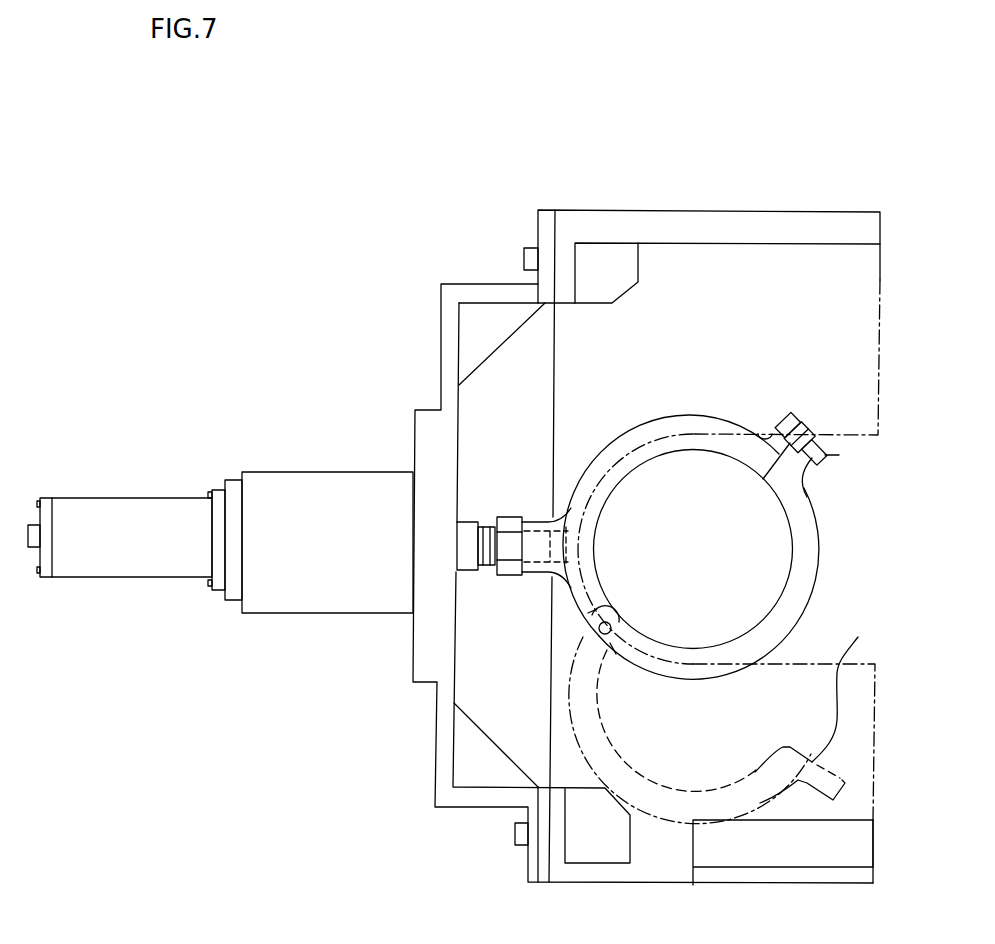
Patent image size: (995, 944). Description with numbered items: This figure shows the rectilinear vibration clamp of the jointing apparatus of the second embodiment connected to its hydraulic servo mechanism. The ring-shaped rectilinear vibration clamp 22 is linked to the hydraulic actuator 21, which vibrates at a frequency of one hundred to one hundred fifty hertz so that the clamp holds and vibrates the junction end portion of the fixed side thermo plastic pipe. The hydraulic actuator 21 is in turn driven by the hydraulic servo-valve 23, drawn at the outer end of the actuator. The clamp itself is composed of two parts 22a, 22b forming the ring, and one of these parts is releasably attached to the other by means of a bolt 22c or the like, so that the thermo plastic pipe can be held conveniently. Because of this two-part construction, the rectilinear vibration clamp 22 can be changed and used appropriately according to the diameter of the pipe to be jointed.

The hydraulic actuator 21 is at (287, 472).
The rectilinear vibration clamp 22 is at (566, 473).
The first part of rectilinear vibration clamp 22a is at (721, 422).
The second part of rectilinear vibration clamp 22b is at (794, 628).
The bolt 22c is at (826, 456).
The hydraulic servo-valve 23 is at (97, 498).